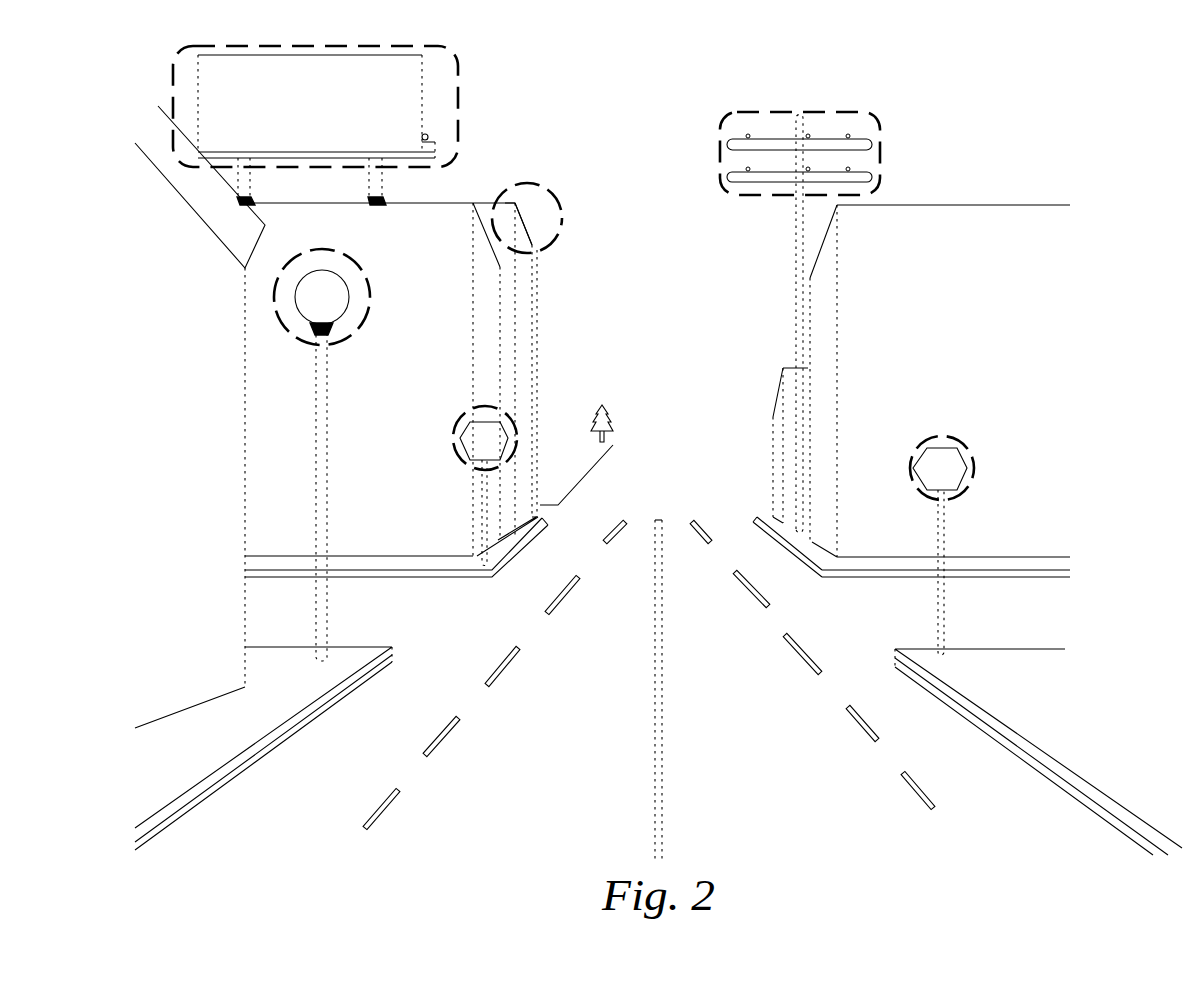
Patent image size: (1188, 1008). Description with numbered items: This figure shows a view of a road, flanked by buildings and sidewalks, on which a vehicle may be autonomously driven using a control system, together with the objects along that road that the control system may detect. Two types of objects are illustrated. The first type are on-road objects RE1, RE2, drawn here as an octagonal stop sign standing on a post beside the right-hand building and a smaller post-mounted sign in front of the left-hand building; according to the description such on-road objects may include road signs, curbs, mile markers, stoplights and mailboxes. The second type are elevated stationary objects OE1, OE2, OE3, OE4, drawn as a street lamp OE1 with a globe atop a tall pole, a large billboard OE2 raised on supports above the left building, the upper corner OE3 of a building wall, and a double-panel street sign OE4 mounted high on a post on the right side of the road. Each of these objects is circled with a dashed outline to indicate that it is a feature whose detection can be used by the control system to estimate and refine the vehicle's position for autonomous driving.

The elevated stationary object OE1 is at (368, 290).
The elevated stationary object OE2 is at (460, 105).
The elevated stationary object OE3 is at (550, 190).
The elevated stationary object OE4 is at (868, 115).
The on-road object RE1 is at (913, 450).
The on-road object RE2 is at (460, 427).